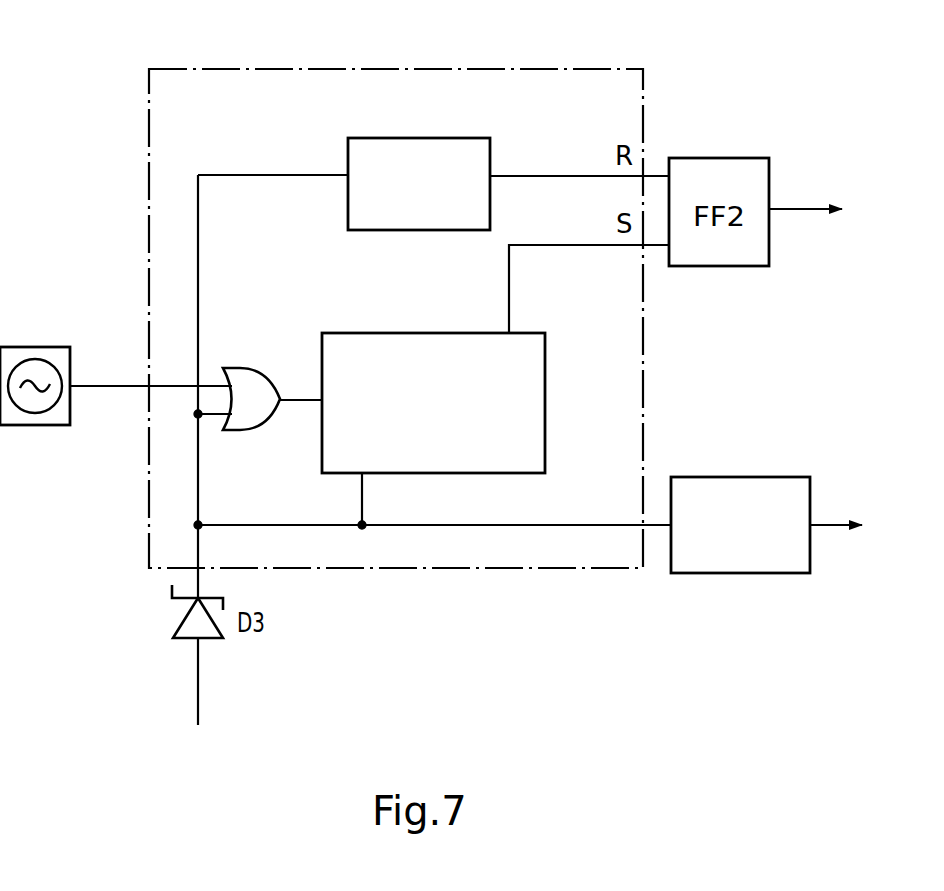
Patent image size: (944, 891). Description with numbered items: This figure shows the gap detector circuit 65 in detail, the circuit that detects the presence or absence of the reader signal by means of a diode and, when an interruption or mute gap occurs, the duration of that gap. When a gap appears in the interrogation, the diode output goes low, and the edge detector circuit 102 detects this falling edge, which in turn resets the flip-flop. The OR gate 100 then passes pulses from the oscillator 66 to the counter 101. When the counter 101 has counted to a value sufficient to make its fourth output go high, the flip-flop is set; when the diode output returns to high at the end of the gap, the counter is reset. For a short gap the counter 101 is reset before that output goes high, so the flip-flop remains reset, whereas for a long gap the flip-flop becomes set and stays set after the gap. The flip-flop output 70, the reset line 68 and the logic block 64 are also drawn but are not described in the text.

The gap detector circuit 65 is at (312, 68).
The edge detector circuit 102 is at (430, 138).
The flip-flop output signal 70 is at (790, 206).
The oscillator 66 is at (32, 346).
The OR gate 100 is at (258, 367).
The counter 101 is at (385, 332).
The reset line 68 is at (622, 523).
The logic circuit 64 is at (736, 476).